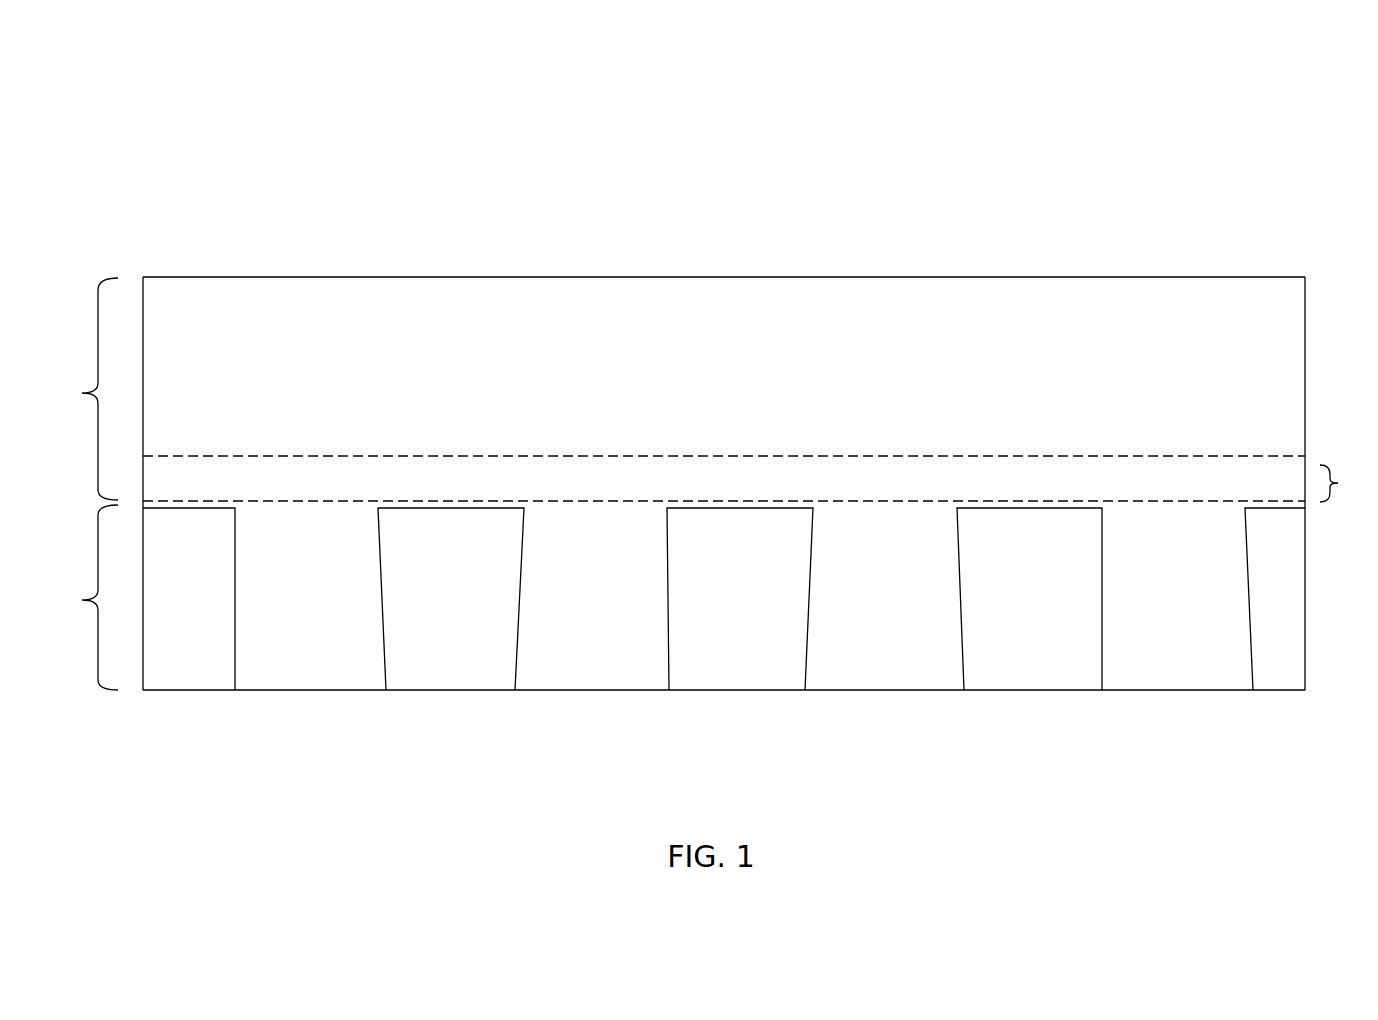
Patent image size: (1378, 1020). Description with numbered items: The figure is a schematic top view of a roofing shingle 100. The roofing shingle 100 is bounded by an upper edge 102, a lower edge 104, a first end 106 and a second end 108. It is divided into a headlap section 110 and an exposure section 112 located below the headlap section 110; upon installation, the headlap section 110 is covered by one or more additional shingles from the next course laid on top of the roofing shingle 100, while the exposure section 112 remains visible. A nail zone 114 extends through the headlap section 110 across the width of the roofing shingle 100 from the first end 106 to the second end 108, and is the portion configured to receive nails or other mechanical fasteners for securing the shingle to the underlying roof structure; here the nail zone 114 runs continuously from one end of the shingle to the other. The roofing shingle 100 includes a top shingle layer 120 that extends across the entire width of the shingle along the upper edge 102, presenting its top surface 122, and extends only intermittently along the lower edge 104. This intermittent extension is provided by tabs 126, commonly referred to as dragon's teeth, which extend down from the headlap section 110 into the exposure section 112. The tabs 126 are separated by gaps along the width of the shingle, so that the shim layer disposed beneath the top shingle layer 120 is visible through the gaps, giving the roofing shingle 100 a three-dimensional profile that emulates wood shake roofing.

The roofing shingle 100 is at (1125, 142).
The upper edge 102 is at (972, 277).
The lower edge 104 is at (831, 691).
The first end 106 is at (148, 236).
The second end 108 is at (1300, 245).
The headlap section 110 is at (82, 393).
The exposure section 112 is at (82, 600).
The nail zone 114 is at (1338, 483).
The top shingle layer 120 is at (422, 322).
The top surface 122 is at (634, 371).
The tabs 126 is at (352, 667).